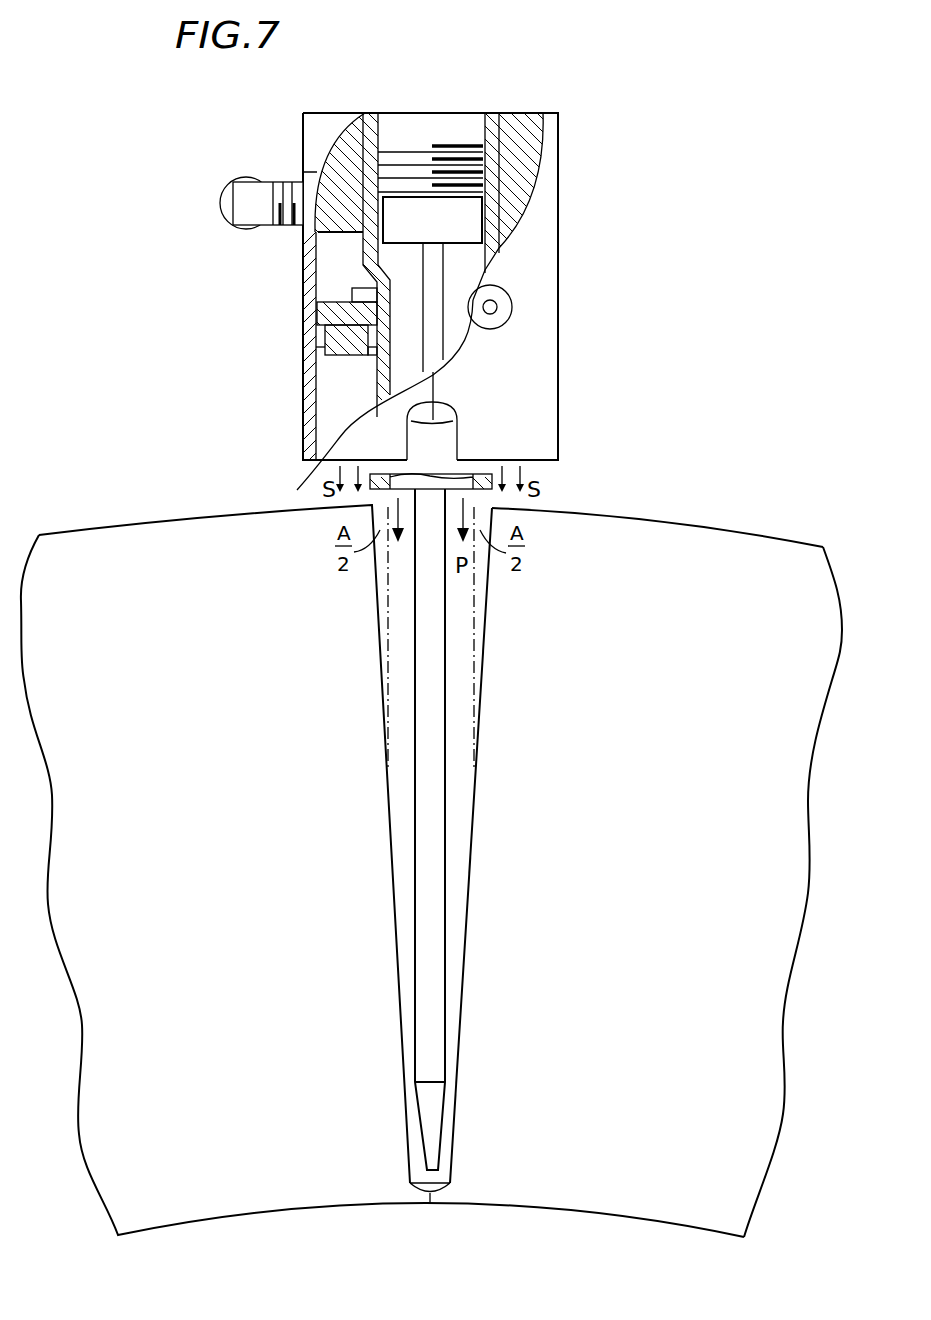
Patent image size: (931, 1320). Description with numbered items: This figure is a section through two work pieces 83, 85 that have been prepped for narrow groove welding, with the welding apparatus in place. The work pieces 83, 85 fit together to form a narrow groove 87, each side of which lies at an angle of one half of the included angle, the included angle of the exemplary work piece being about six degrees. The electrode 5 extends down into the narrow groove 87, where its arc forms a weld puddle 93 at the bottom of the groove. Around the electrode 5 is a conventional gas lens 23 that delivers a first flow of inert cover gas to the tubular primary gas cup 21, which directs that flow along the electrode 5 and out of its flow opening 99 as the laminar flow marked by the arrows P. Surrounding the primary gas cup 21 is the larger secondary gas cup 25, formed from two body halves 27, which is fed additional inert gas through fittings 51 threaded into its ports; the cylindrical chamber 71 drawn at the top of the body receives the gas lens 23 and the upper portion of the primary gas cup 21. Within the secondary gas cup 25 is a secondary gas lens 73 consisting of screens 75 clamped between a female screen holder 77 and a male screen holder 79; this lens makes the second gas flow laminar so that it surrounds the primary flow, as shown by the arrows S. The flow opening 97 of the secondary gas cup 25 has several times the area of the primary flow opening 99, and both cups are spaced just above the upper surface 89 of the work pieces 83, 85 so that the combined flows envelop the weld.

The electrode 5 is at (438, 851).
The primary gas cup 21 is at (382, 393).
The gas lens 23 is at (473, 203).
The secondary gas cup 25 is at (578, 238).
The body half 27 is at (545, 373).
The fitting 51 is at (252, 190).
The cylinder 71 is at (458, 128).
The secondary gas lens 73 is at (284, 332).
The screens 75 is at (330, 333).
The female screen holder 77 is at (333, 307).
The male screen holder 79 is at (340, 347).
The work piece 83 is at (602, 853).
The work piece 85 is at (158, 530).
The narrow groove 87 is at (469, 922).
The upper surface 89 is at (618, 512).
The weld puddle 93 is at (427, 1187).
The flow opening 97 is at (297, 490).
The flow opening 99 is at (483, 477).